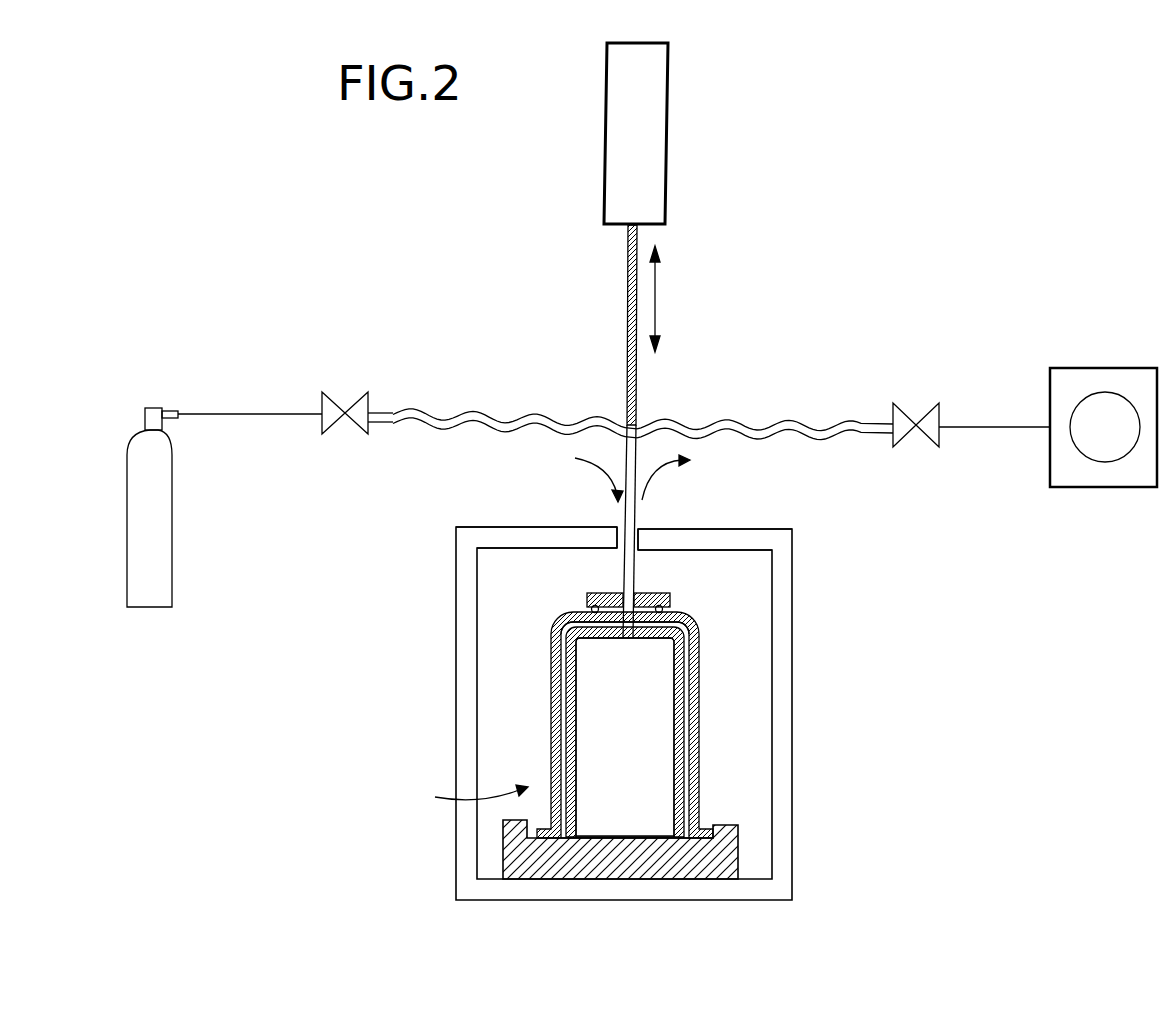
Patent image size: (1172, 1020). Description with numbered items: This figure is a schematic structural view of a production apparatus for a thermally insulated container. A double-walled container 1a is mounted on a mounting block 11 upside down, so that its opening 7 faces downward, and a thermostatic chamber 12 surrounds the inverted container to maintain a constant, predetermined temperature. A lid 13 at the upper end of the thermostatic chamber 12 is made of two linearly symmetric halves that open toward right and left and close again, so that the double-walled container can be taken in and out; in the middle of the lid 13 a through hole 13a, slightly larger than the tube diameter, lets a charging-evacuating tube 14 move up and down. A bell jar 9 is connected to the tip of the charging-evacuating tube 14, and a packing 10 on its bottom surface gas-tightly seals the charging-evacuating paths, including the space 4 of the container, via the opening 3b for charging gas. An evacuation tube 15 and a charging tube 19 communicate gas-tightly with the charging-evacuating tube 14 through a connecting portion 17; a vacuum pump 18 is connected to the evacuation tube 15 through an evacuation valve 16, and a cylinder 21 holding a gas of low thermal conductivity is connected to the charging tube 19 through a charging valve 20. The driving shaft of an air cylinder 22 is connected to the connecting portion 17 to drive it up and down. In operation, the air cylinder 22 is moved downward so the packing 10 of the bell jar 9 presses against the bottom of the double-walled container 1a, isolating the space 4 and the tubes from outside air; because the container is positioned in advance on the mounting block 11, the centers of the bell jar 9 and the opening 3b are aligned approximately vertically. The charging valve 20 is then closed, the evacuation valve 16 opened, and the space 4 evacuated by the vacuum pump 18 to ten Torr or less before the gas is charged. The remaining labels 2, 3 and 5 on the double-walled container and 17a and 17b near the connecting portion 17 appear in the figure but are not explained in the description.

The double-walled container 1a is at (460, 798).
The crucible cavity 2 is at (619, 640).
The crucible 3 is at (570, 716).
The opening for charging gas 3b is at (688, 625).
The space 4 is at (553, 745).
The inner wall layer 5 is at (690, 690).
The opening 7 is at (640, 835).
The bell jar 9 is at (660, 594).
The packing 10 is at (590, 607).
The mounting block 11 is at (740, 862).
The thermostatic chamber 12 is at (792, 718).
The lid 13 is at (780, 533).
The through hole 13a is at (640, 527).
The charging-evacuating tube 14 is at (640, 512).
The evacuation tube 15 is at (795, 425).
The evacuation valve 16 is at (917, 420).
The connecting portion 17 is at (647, 421).
The gas flow direction 17a is at (648, 437).
The gas flow direction 17b is at (612, 437).
The vacuum pump 18 is at (1108, 382).
The charging tube 19 is at (547, 428).
The charging valve 20 is at (345, 405).
The cylinder 21 is at (131, 447).
The air cylinder 22 is at (668, 97).